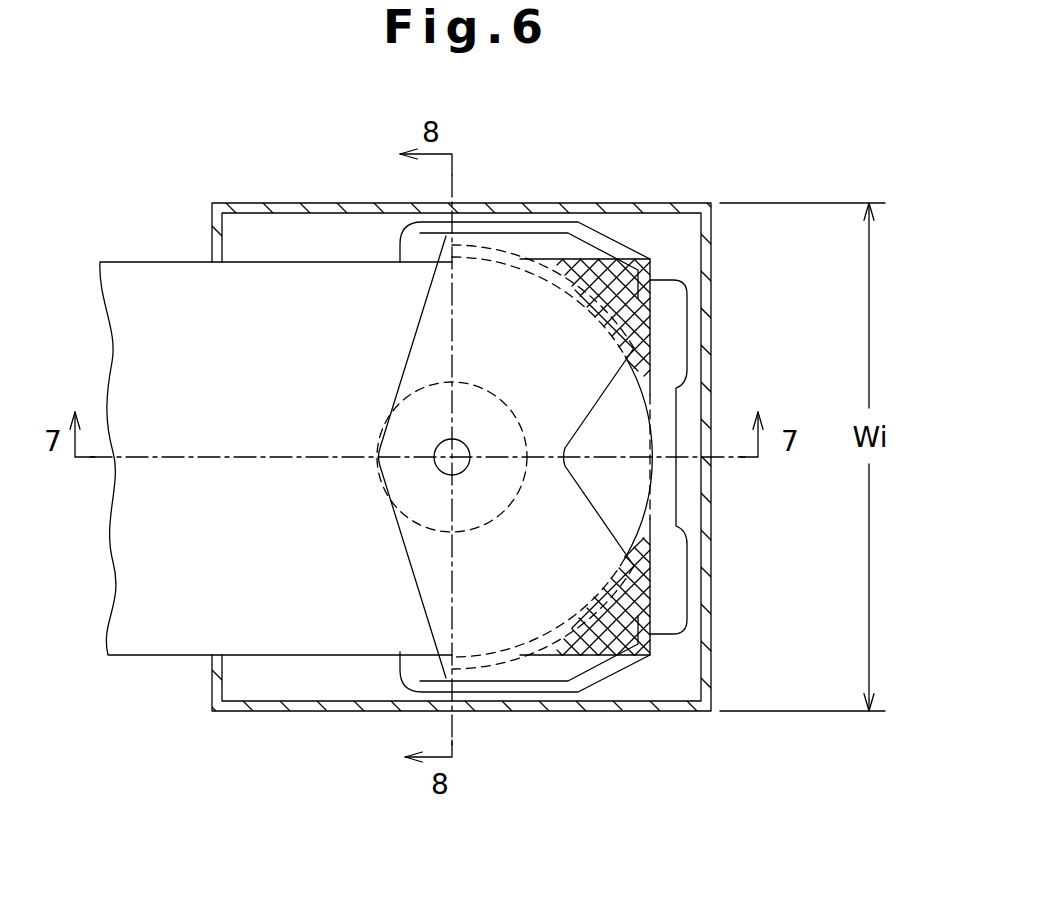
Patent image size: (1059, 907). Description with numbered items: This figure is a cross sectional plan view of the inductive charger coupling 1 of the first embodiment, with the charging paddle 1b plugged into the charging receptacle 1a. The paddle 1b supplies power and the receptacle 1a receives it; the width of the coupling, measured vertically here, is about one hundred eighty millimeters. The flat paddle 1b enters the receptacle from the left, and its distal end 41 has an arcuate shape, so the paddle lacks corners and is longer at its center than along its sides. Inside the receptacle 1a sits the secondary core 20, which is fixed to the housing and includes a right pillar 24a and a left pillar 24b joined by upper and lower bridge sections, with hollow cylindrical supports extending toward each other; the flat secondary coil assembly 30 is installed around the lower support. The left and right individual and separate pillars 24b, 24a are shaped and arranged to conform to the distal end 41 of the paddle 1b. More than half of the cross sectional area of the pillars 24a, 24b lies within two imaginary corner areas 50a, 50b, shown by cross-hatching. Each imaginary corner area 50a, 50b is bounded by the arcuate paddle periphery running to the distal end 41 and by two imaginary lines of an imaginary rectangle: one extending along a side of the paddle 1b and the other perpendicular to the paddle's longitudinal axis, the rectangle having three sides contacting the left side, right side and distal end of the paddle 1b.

The inductive charger coupling 1 is at (697, 182).
The charging receptacle 1a is at (233, 203).
The charging paddle 1b is at (160, 257).
The secondary core 20 is at (408, 312).
The right pillar 24a is at (548, 250).
The left pillar 24b is at (538, 668).
The flat secondary coil assembly 30 is at (400, 665).
The distal end 41 is at (692, 400).
The imaginary corner area 50a is at (650, 297).
The imaginary corner area 50b is at (650, 560).